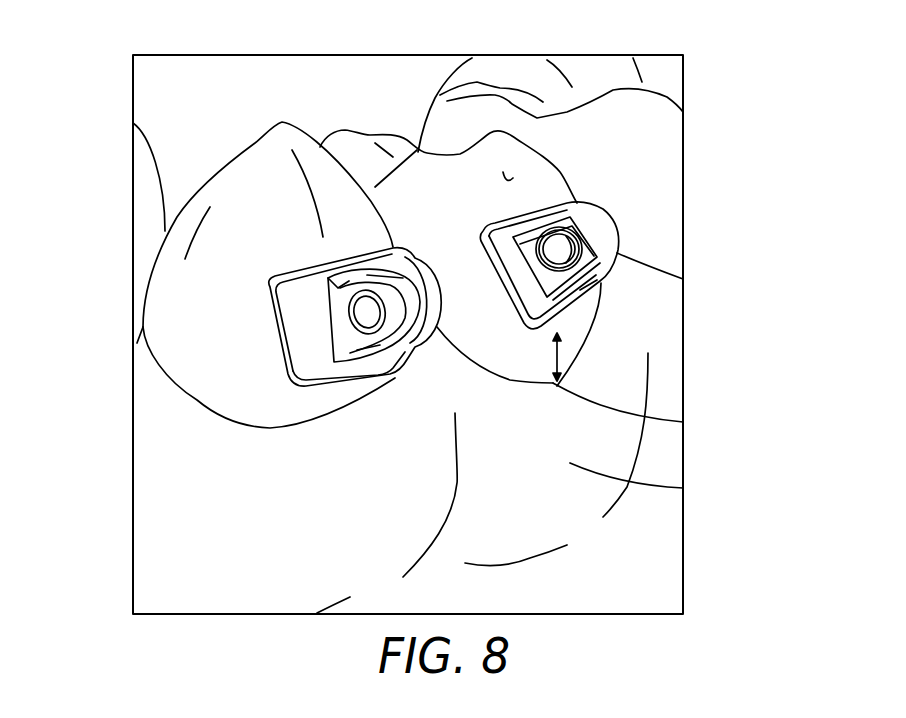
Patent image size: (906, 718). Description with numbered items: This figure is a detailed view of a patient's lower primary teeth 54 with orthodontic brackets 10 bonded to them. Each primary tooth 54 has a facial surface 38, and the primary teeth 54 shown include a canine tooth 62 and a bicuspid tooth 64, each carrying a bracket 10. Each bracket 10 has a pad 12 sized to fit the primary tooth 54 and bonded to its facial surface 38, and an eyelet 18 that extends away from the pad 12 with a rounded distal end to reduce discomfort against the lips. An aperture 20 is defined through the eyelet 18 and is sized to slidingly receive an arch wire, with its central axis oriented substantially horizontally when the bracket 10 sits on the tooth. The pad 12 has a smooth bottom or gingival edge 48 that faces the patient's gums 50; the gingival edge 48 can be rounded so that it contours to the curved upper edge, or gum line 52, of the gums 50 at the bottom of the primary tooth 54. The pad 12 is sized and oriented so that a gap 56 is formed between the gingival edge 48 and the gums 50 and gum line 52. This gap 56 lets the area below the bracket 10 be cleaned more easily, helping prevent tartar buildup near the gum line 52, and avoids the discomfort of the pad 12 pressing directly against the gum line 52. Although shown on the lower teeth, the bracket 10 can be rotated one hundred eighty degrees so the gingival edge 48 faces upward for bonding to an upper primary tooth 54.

The orthodontic bracket 10 is at (270, 302).
The pad 12 is at (290, 333).
The eyelet 18 is at (387, 277).
The aperture 20 is at (364, 313).
The facial surface 38 is at (279, 239).
The gingival edge 48 is at (312, 383).
The gums 50 is at (392, 493).
The gum line 52 is at (263, 432).
The primary tooth 54 is at (260, 162).
The gap 56 is at (560, 353).
The canine tooth 62 is at (274, 122).
The bicuspid tooth 64 is at (443, 185).